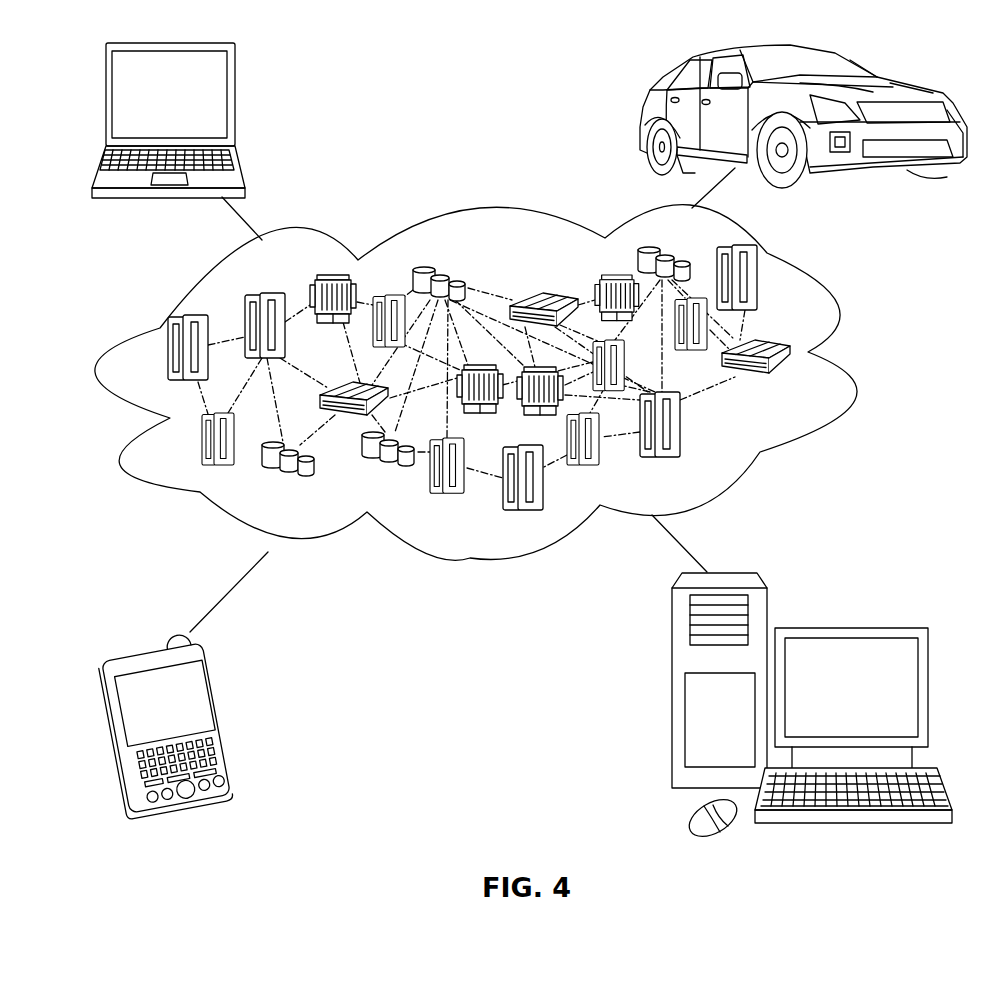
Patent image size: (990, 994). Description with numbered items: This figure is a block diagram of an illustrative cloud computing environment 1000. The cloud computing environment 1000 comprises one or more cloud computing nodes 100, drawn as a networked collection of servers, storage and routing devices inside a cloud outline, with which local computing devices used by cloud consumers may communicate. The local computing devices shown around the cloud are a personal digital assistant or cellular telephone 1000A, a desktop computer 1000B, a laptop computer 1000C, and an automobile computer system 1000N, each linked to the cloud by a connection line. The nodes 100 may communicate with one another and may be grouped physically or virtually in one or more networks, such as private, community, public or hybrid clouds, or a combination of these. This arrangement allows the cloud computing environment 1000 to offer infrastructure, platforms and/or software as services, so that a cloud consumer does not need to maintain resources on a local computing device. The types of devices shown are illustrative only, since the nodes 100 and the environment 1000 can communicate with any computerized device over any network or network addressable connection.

The laptop computer 1000C is at (246, 104).
The automobile computer system 1000N is at (640, 118).
The cloud computing environment 1000 is at (850, 357).
The cloud computing nodes 100 is at (799, 385).
The personal digital assistant or cellular telephone 1000A is at (222, 716).
The desktop computer 1000B is at (848, 628).